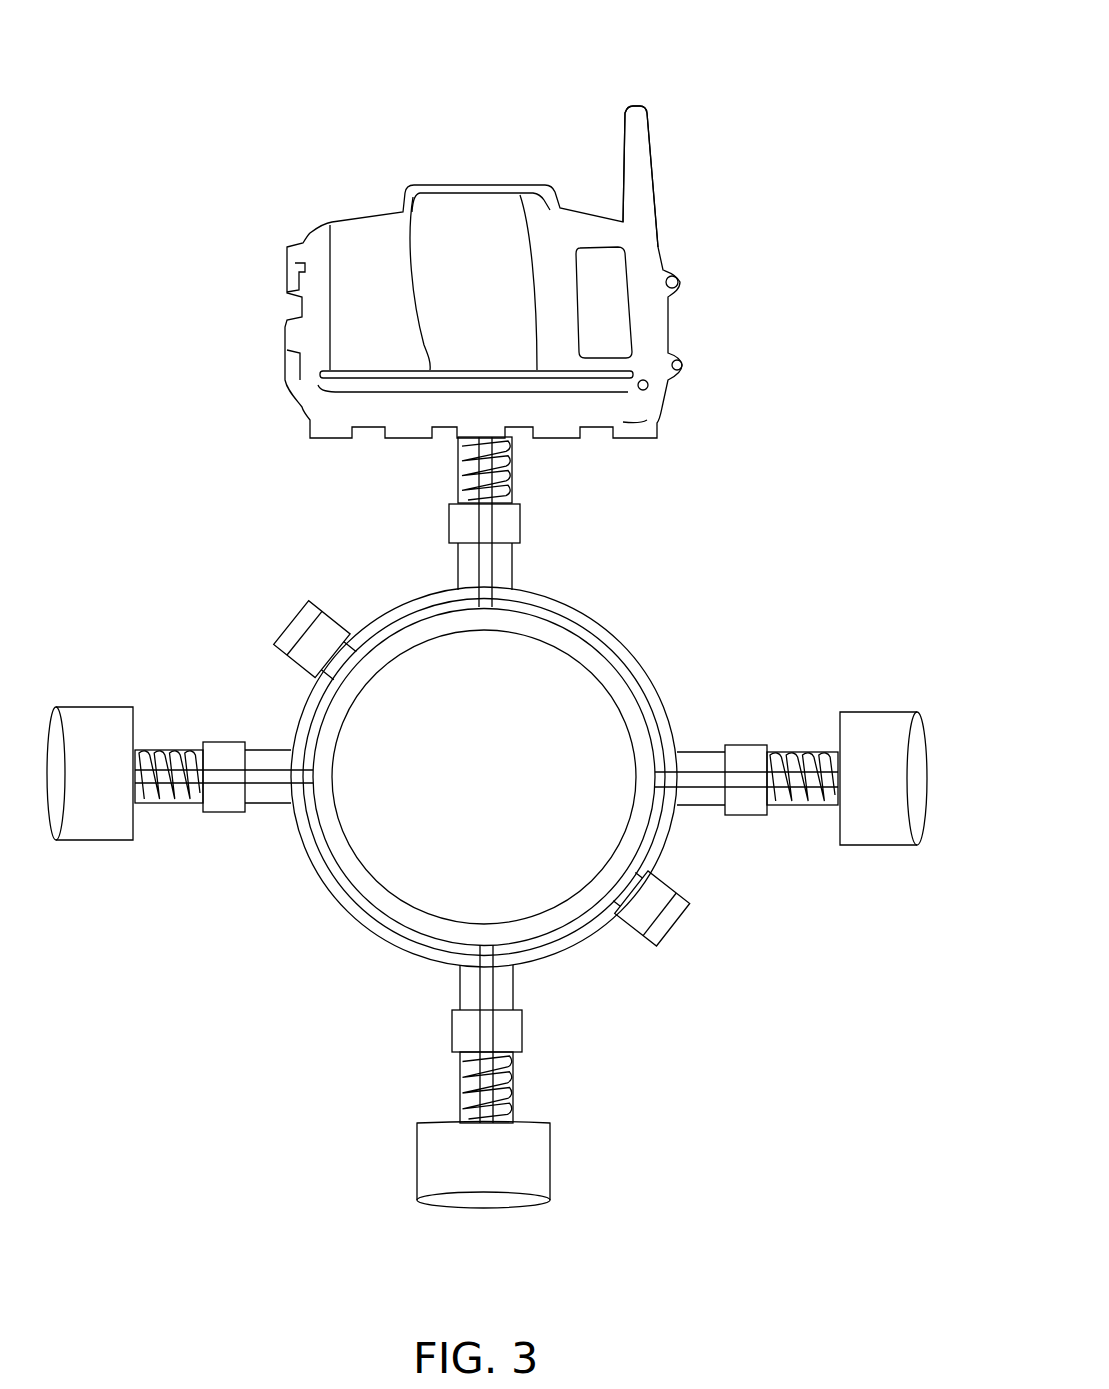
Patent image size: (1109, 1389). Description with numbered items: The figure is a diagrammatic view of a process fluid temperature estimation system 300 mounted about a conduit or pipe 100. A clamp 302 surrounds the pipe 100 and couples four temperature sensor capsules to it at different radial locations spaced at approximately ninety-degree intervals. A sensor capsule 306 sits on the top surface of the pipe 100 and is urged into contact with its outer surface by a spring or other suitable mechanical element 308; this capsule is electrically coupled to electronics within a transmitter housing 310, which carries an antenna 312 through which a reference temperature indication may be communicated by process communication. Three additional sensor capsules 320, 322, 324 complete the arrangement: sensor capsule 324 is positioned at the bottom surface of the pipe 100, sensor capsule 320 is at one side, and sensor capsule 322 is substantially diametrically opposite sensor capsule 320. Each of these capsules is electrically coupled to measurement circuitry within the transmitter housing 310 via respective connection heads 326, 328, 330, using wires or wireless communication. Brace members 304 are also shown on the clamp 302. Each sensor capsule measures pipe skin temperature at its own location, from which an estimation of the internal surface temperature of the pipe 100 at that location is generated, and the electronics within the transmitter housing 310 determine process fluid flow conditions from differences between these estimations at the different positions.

The process fluid temperature estimation system 300 is at (838, 78).
The pipe 100 is at (387, 920).
The clamp 302 is at (674, 722).
The brace 304 is at (324, 612).
The sensor capsule 306 is at (493, 575).
The spring 308 is at (513, 477).
The transmitter housing 310 is at (372, 215).
The antenna 312 is at (652, 150).
The sensor capsule 320 is at (687, 787).
The sensor capsule 322 is at (275, 803).
The sensor capsule 324 is at (493, 988).
The connection head 326 is at (920, 712).
The connection head 328 is at (550, 1200).
The connection head 330 is at (87, 707).